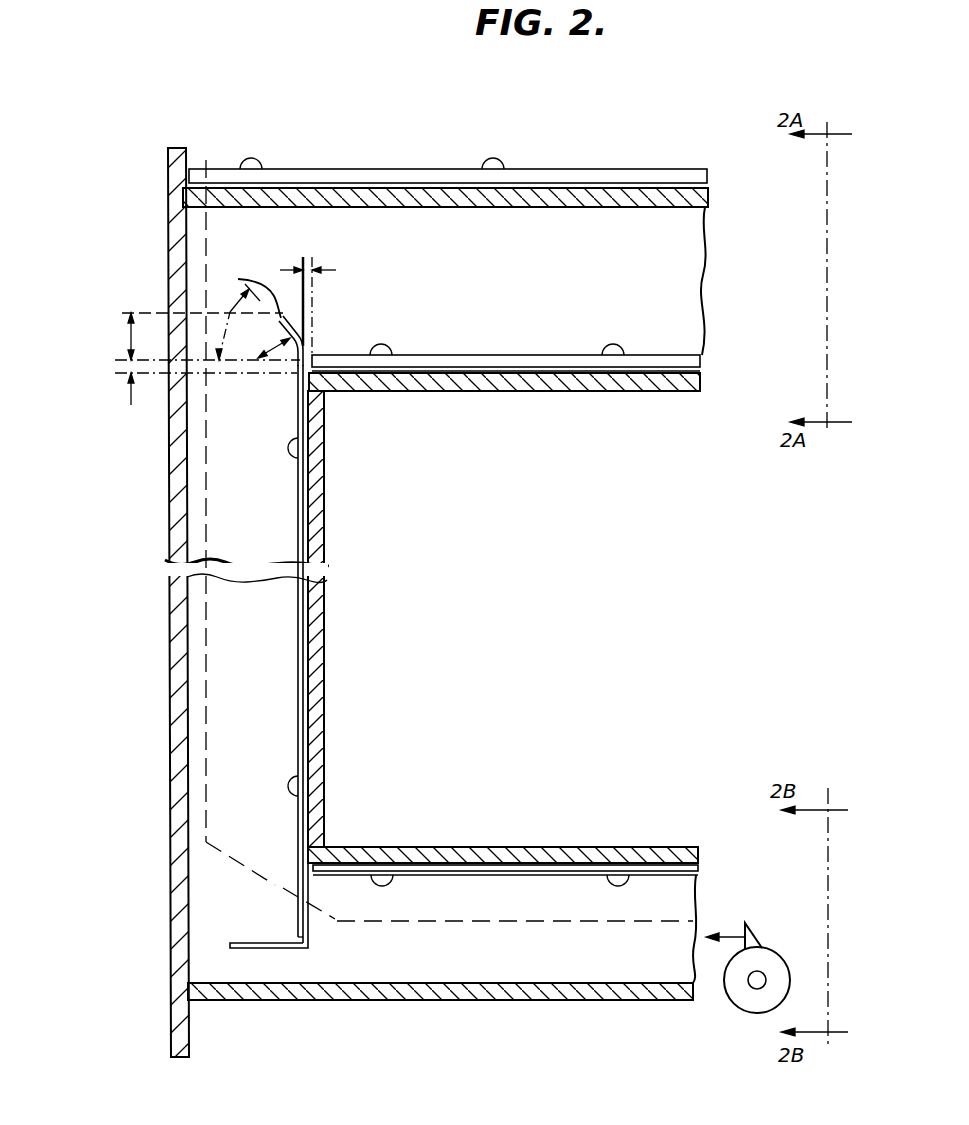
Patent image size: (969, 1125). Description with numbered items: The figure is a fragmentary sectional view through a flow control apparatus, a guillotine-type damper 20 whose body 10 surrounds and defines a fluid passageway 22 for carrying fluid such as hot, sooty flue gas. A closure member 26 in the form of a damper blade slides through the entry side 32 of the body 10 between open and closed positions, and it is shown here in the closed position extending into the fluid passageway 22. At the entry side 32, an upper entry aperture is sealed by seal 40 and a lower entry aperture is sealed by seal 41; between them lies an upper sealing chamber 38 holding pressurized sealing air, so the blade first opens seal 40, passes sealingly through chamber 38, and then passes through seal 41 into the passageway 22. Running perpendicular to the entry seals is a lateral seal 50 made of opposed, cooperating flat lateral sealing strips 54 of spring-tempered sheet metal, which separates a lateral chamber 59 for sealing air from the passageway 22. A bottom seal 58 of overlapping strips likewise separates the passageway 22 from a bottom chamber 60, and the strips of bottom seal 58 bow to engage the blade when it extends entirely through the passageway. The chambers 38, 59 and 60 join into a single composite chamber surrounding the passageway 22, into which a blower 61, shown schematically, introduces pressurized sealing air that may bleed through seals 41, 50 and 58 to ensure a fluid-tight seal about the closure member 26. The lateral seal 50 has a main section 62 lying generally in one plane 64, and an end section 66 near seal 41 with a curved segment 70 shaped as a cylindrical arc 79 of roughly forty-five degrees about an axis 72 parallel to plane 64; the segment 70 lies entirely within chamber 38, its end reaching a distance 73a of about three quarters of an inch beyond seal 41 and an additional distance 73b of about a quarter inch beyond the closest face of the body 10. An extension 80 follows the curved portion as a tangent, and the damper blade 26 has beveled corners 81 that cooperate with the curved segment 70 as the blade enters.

The body 10 is at (542, 1005).
The damper 20 is at (160, 484).
The fluid passageway 22 is at (472, 641).
The closure member 26 is at (555, 902).
The entry side 32 is at (723, 281).
The upper sealing chamber 38 is at (542, 271).
The upper entry seal 40 is at (578, 182).
The lower entry seal 41 is at (574, 360).
The lateral seal 50 is at (296, 603).
The lateral sealing strip 54 is at (303, 657).
The bottom seal 58 is at (490, 862).
The lateral chamber 59 is at (593, 953).
The bottom chamber 60 is at (228, 697).
The blower 61 is at (758, 942).
The main section 62 is at (297, 488).
The plane 64 is at (300, 290).
The end section 66 is at (298, 362).
The curved segment 70 is at (290, 330).
The axis 72 is at (257, 364).
The distance 73a is at (131, 338).
The additional distance 73b is at (131, 405).
The cylindrical arc 79 is at (228, 332).
The extension 80 is at (246, 307).
The beveled corner 81 is at (272, 884).